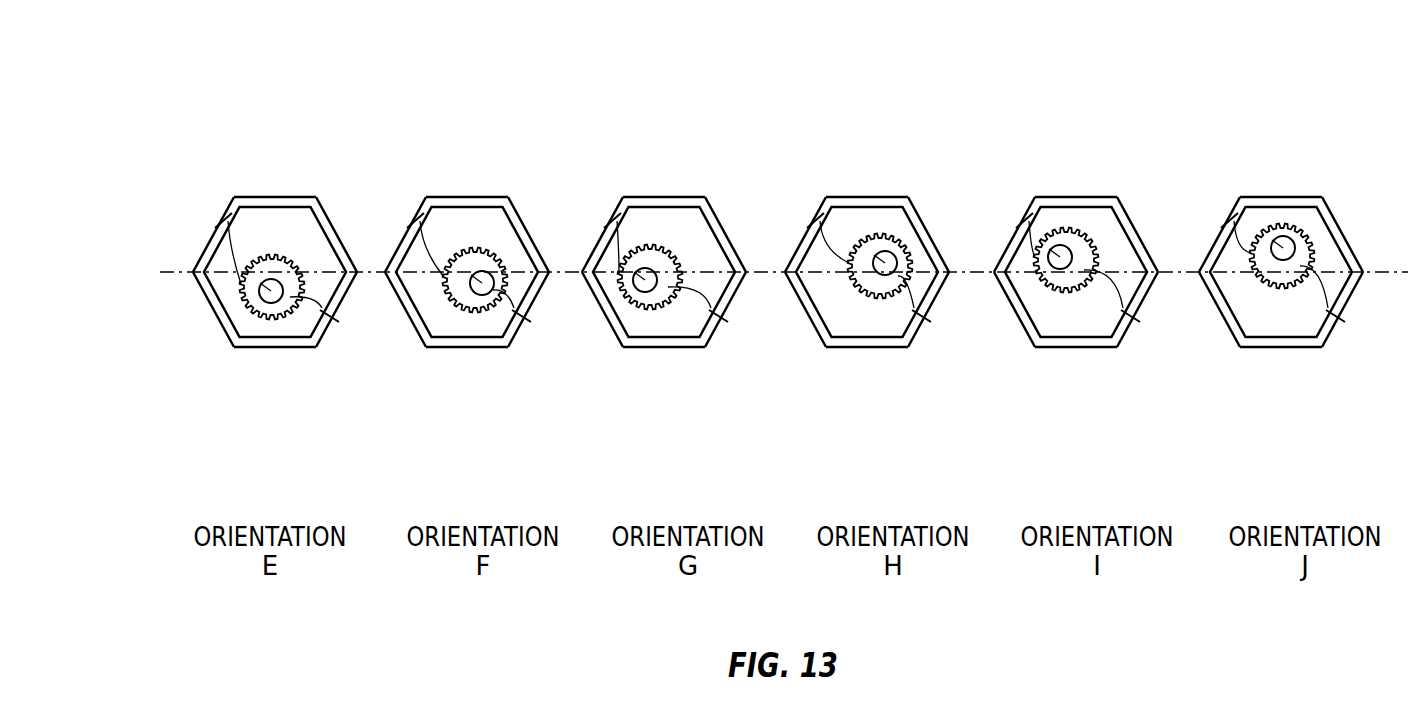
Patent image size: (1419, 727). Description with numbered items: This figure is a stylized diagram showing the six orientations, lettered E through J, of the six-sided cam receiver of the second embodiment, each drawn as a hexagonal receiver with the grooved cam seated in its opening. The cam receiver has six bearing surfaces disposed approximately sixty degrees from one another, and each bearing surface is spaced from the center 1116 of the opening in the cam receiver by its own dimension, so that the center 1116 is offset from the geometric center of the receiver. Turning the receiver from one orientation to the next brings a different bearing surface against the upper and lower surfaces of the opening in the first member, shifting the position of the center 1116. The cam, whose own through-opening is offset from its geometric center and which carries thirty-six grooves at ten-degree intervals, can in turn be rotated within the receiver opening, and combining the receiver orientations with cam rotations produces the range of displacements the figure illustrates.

The center of the opening 1116 is at (467, 389).